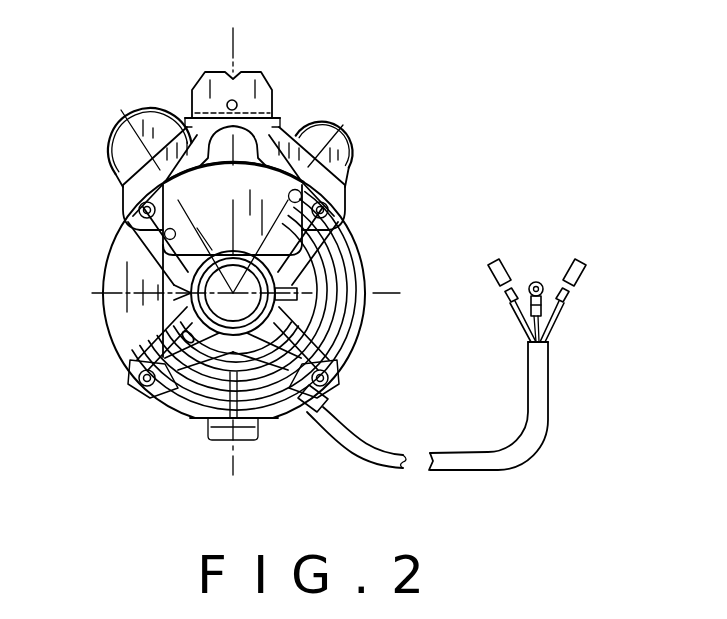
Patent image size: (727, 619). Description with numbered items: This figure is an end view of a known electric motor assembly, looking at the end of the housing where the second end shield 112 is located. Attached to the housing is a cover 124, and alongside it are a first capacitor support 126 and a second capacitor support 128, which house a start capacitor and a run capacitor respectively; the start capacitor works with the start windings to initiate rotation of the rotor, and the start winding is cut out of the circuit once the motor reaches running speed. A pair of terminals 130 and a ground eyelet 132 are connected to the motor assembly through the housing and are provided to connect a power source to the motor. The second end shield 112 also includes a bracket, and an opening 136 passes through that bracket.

The second end shield 112 is at (268, 412).
The cover 124 is at (207, 97).
The first capacitor support 126 is at (137, 153).
The second capacitor support 128 is at (333, 143).
The terminals 130 is at (491, 259).
The ground eyelet 132 is at (535, 281).
The opening 136 is at (237, 102).